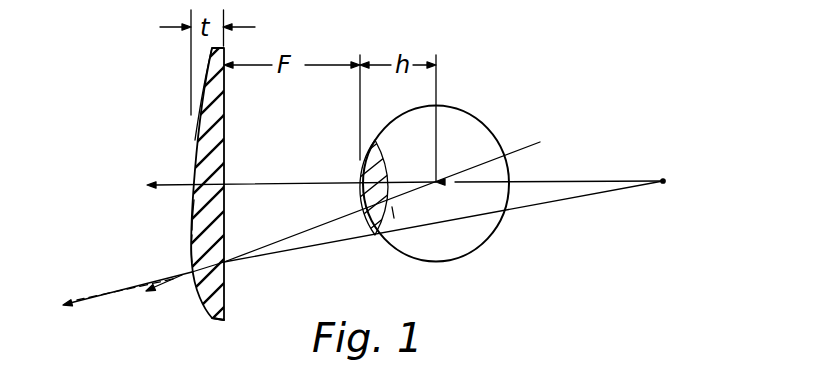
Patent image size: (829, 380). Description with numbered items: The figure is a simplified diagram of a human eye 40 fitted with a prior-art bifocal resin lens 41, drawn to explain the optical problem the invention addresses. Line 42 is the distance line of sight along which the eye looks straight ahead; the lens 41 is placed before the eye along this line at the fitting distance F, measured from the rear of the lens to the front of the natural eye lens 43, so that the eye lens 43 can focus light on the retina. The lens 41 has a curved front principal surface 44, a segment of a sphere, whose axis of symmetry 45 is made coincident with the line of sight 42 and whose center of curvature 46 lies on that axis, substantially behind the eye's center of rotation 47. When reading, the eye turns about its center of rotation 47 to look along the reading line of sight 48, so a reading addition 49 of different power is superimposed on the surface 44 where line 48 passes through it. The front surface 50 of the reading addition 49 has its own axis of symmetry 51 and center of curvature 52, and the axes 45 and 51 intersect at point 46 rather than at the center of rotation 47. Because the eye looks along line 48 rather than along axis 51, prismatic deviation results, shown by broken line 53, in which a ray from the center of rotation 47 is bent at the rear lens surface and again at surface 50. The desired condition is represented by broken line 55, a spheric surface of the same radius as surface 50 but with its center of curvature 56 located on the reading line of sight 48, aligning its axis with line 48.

The human eye 40 is at (492, 121).
The resin lens 41 is at (179, 124).
The line of sight 42 is at (530, 181).
The eye lens 43 is at (367, 163).
The front principal surface 44 is at (207, 76).
The axis of symmetry 45 is at (260, 185).
The center of curvature 46 is at (664, 180).
The center of rotation 47 is at (439, 183).
The reading line of sight 48 is at (164, 291).
The reading addition 49 is at (181, 247).
The front surface of reading addition 50 is at (206, 314).
The axis of symmetry of reading addition 51 is at (297, 252).
The center of curvature of reading addition 52 is at (345, 240).
The broken line representing prismatic deviation 53 is at (177, 271).
The desired spheric surface 55 is at (186, 227).
The center of curvature of desired surface 56 is at (337, 218).